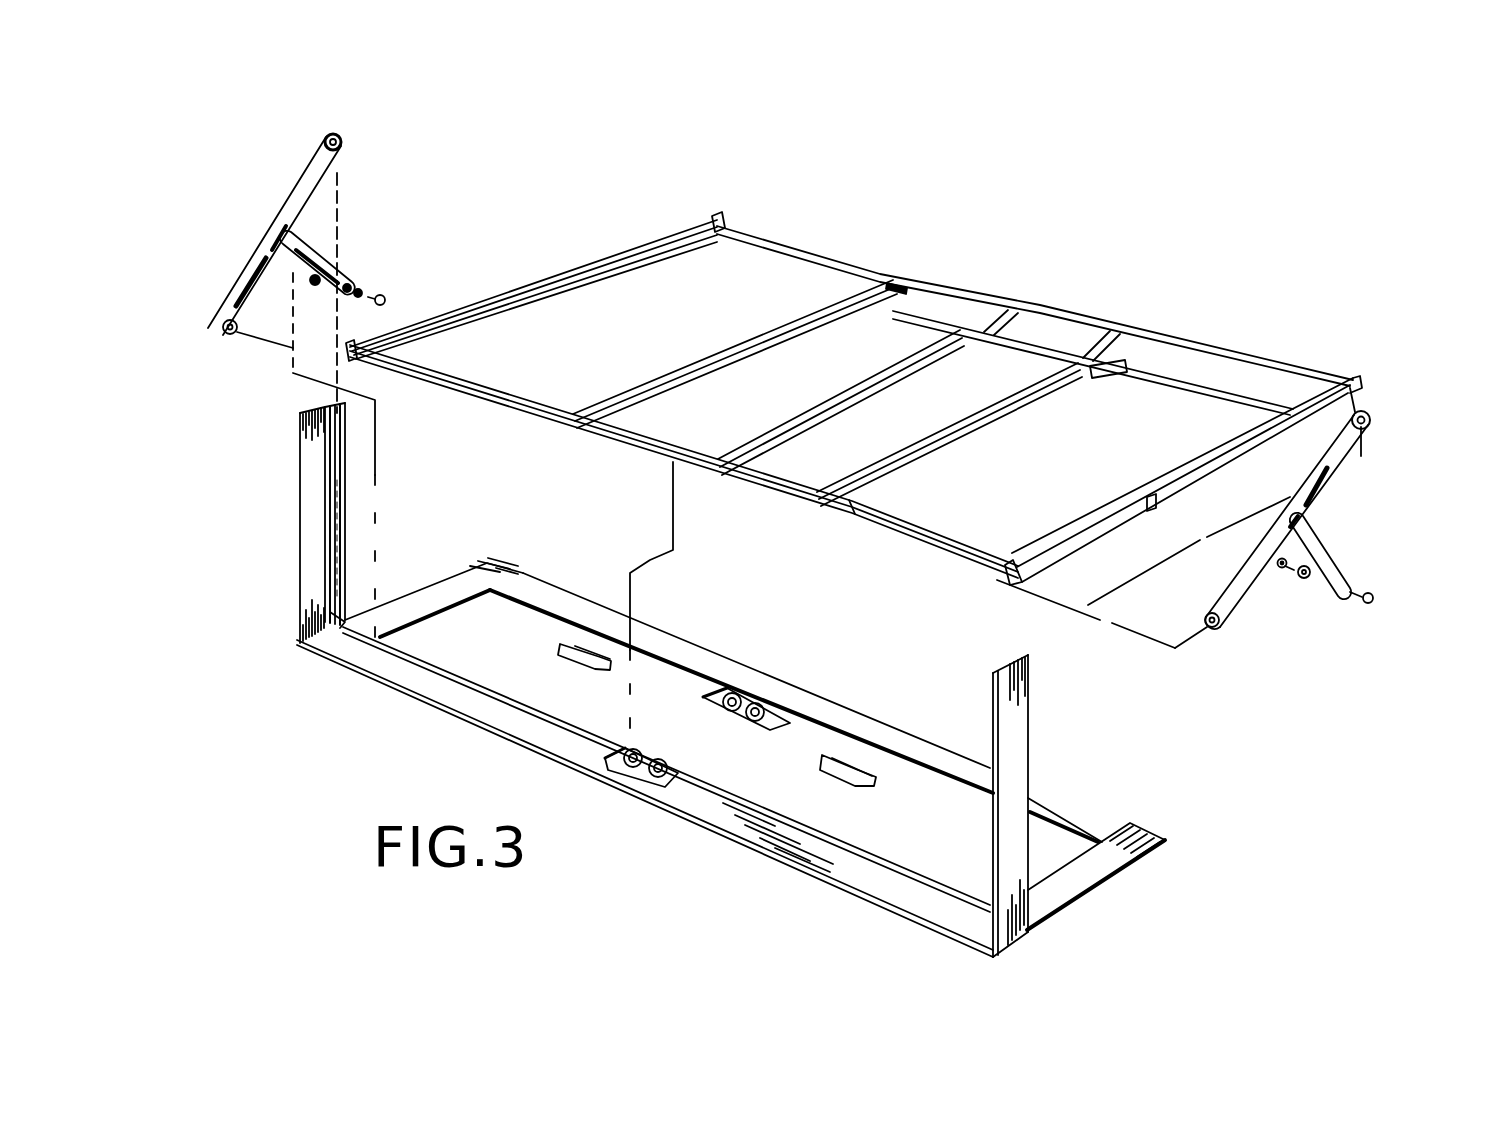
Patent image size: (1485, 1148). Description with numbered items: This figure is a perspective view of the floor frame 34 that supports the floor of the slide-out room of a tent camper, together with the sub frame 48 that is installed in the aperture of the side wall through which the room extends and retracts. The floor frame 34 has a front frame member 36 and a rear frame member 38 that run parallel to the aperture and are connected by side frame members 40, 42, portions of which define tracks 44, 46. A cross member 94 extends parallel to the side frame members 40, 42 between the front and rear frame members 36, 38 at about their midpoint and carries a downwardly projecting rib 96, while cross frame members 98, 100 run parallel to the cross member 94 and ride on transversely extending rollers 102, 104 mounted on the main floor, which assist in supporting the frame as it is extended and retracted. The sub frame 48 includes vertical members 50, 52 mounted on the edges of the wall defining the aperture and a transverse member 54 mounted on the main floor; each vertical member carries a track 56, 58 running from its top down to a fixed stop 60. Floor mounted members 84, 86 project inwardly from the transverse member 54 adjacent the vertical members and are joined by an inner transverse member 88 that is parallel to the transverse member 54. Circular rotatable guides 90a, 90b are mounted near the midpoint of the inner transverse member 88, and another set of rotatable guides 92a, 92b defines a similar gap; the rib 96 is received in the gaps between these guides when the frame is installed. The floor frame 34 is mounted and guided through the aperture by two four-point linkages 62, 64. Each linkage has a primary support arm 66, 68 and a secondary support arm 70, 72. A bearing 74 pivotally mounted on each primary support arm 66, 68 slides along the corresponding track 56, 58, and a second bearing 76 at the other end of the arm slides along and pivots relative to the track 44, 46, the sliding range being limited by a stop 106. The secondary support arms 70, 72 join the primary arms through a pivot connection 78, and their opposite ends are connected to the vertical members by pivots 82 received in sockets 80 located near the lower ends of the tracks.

The floor frame 34 is at (1250, 363).
The front frame member 36 is at (853, 513).
The rear frame member 38 is at (973, 297).
The side frame member 40 is at (1203, 492).
The side frame member 42 is at (719, 222).
The track 44 is at (1071, 531).
The track 46 is at (407, 328).
The sub frame 48 is at (950, 945).
The vertical member 50 is at (312, 550).
The vertical member 52 is at (1010, 730).
The transverse member 54 is at (713, 807).
The track 56 is at (340, 457).
The track 58 is at (1010, 660).
The fixed stop 60 is at (340, 552).
The four-point linkage 62 is at (1303, 520).
The four-point linkage 64 is at (270, 224).
The primary support arm 66 is at (1329, 477).
The primary support arm 68 is at (320, 187).
The secondary support arm 70 is at (1329, 563).
The secondary support arm 72 is at (332, 268).
The bearing 74 is at (337, 136).
The second bearing 76 is at (230, 334).
The pivot connection 78 is at (257, 253).
The socket 80 is at (340, 620).
The pivot 82 is at (380, 300).
The floor mounted member 84 is at (1080, 873).
The floor mounted member 86 is at (480, 567).
The inner transverse member 88 is at (857, 733).
The rotatable guide 90a is at (730, 690).
The rotatable guide 90b is at (777, 707).
The rotatable guide 92a is at (640, 753).
The rotatable guide 92b is at (670, 768).
The cross member 94 is at (813, 404).
The downwardly projecting rib 96 is at (820, 408).
The cross frame member 98 is at (730, 358).
The cross frame member 100 is at (950, 430).
The roller 102 is at (573, 653).
The roller 104 is at (843, 773).
The stop 106 is at (1155, 510).